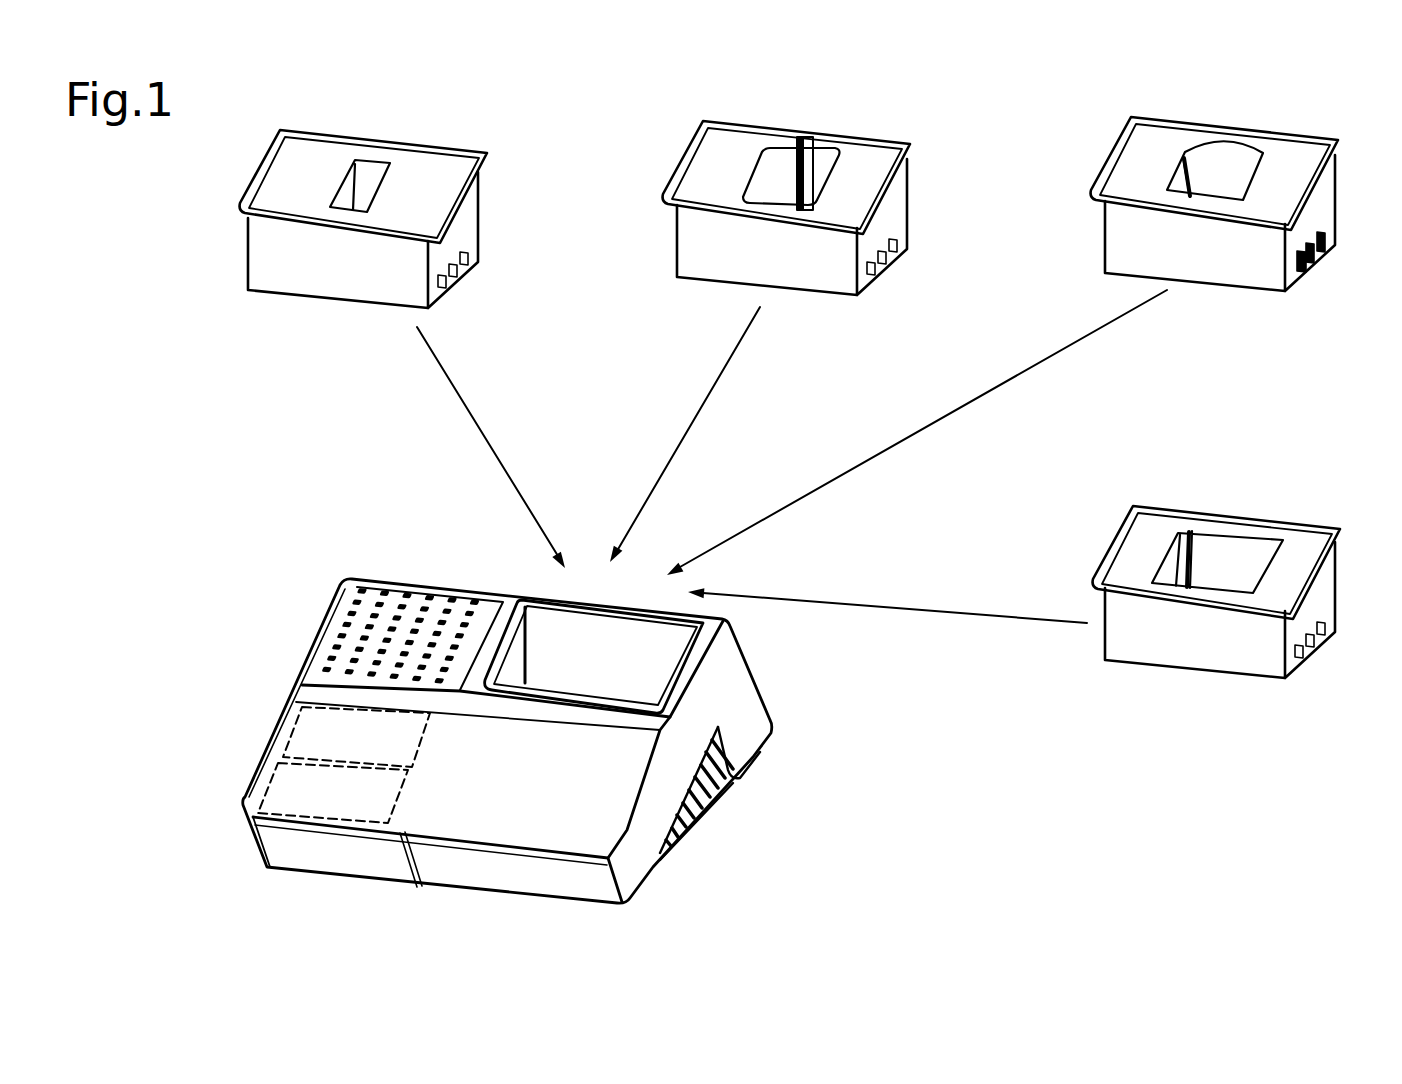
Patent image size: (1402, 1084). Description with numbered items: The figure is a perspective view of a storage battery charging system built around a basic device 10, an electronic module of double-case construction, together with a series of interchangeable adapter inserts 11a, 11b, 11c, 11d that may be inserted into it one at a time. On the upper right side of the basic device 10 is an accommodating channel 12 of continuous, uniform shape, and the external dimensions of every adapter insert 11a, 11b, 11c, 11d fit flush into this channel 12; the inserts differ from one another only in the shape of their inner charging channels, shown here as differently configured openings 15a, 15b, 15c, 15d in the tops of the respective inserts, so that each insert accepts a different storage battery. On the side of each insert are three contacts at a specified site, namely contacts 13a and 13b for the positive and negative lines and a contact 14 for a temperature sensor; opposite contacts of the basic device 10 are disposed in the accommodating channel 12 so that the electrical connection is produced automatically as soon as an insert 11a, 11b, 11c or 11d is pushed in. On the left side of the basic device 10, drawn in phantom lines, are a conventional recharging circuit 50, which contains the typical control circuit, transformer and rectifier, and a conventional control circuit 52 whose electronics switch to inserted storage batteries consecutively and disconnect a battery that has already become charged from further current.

The basic device 10 is at (467, 702).
The interchangeable adapter insert 11a is at (357, 225).
The interchangeable adapter insert 11b is at (737, 248).
The interchangeable adapter insert 11c is at (1180, 218).
The interchangeable adapter insert 11d is at (1224, 607).
The accommodating channel 12 is at (543, 623).
The contact 13a is at (1302, 280).
The contact 13b is at (1313, 267).
The contact for a temperature sensor 14 is at (1327, 255).
The battery receiving slot 15a is at (353, 167).
The battery receiving slot 15b is at (757, 182).
The battery receiving slot 15c is at (1235, 150).
The battery receiving slot 15d is at (1247, 540).
The recharging circuit 50 is at (290, 732).
The control circuit 52 is at (267, 785).